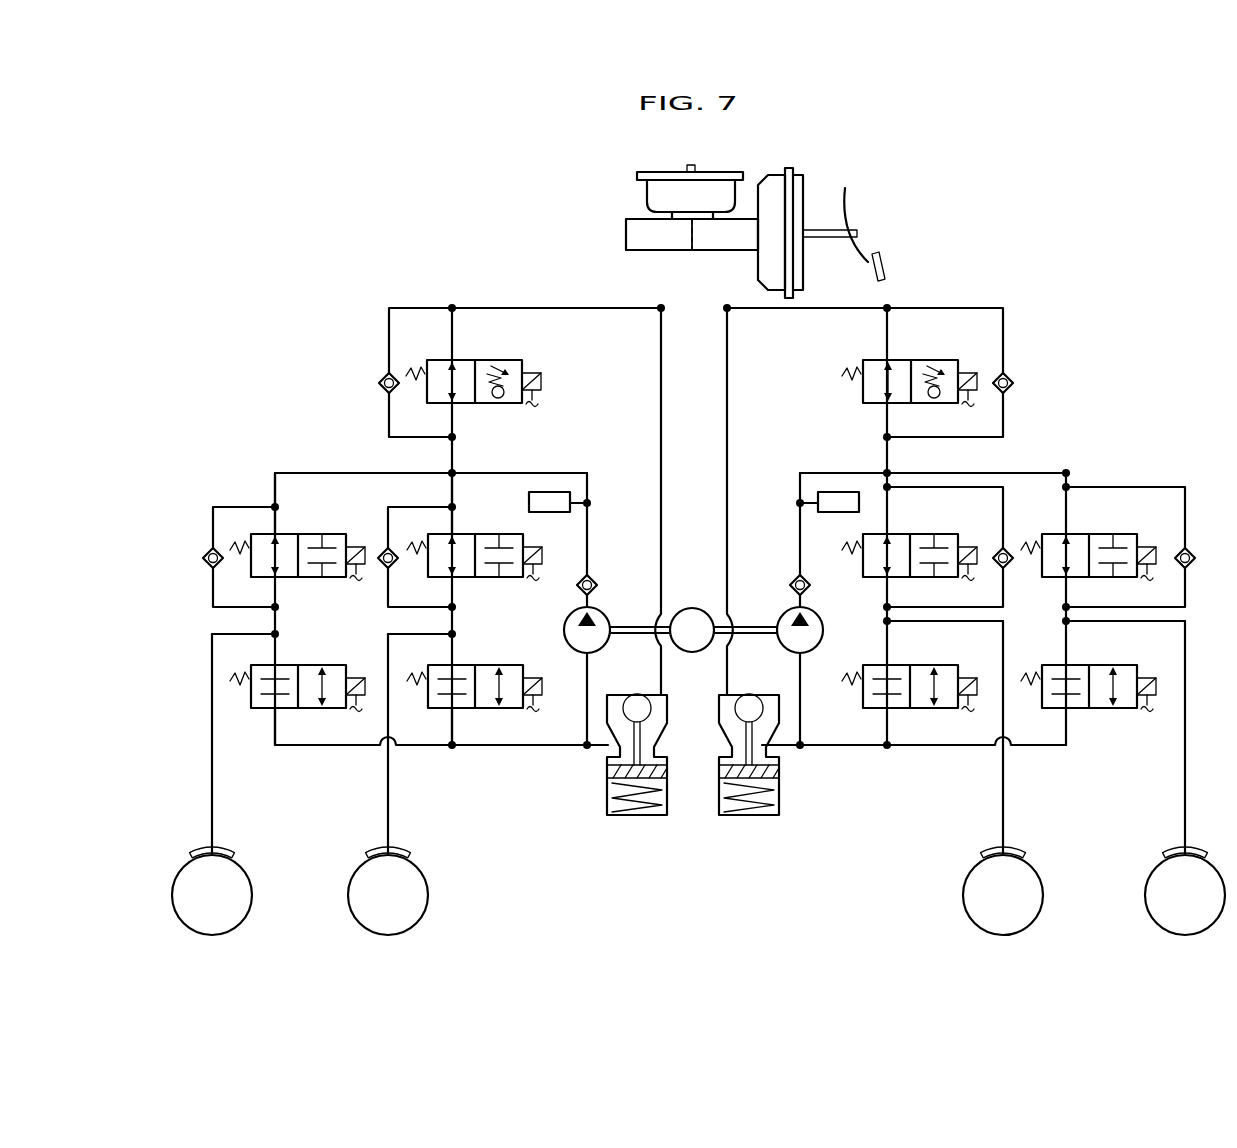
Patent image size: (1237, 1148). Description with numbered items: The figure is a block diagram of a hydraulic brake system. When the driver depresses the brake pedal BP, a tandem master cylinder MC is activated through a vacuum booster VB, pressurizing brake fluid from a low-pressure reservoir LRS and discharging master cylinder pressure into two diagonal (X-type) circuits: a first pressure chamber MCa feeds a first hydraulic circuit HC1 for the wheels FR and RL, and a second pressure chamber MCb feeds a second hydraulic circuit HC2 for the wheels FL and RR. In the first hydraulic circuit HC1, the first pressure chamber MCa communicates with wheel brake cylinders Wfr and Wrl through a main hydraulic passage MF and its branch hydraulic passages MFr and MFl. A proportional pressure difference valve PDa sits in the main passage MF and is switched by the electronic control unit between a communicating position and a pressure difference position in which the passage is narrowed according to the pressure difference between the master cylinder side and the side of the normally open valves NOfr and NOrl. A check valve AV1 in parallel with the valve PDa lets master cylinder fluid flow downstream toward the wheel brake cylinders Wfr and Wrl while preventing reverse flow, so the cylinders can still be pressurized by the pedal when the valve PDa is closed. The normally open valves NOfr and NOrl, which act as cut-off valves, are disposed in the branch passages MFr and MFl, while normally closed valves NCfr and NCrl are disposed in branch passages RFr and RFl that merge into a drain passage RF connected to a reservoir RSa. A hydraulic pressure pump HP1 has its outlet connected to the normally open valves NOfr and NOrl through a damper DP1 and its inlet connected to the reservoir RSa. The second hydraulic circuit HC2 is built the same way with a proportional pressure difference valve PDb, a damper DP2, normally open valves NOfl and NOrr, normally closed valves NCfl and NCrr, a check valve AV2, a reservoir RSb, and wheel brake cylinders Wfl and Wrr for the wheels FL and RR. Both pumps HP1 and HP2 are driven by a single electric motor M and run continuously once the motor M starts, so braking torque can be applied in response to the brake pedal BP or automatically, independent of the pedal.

The low-pressure reservoir LRS is at (650, 195).
The master cylinder MC is at (653, 257).
The first pressure chamber MCa is at (641, 252).
The second pressure chamber MCb is at (712, 252).
The vacuum booster VB is at (803, 278).
The brake pedal BP is at (859, 264).
The first hydraulic circuit HC1 is at (500, 300).
The second hydraulic circuit HC2 is at (913, 300).
The check valve AV1 is at (380, 386).
The check valve AV2 is at (1009, 386).
The proportional pressure difference valve PDa is at (477, 362).
The proportional pressure difference valve PDb is at (912, 362).
The main hydraulic passage MF is at (451, 466).
The branch hydraulic passage MFr is at (276, 497).
The branch hydraulic passage MFl is at (453, 497).
The normally open valve NOfr is at (300, 533).
The normally open valve NOrl is at (477, 533).
The normally closed valve NCfr is at (300, 665).
The normally closed valve NCrl is at (476, 665).
The normally open valve NOfl is at (910, 533).
The normally open valve NOrr is at (1089, 533).
The normally closed valve NCfl is at (910, 665).
The normally closed valve NCrr is at (1089, 665).
The damper DP1 is at (533, 513).
The damper DP2 is at (835, 513).
The hydraulic pressure pump HP1 is at (597, 610).
The hydraulic pressure pump HP2 is at (787, 610).
The electric motor M is at (693, 630).
The reservoir RSa is at (607, 773).
The reservoir RSb is at (779, 773).
The branch passage RFr is at (310, 747).
The branch passage RFl is at (453, 735).
The drain passage RF is at (478, 747).
The wheel brake cylinder Wfr is at (197, 784).
The wheel brake cylinder Wrl is at (373, 784).
The wheel brake cylinder Wfl is at (1012, 778).
The wheel brake cylinder Wrr is at (1191, 778).
The wheel FR is at (184, 851).
The wheel RL is at (359, 851).
The wheel FL is at (1028, 852).
The wheel RR is at (1214, 852).